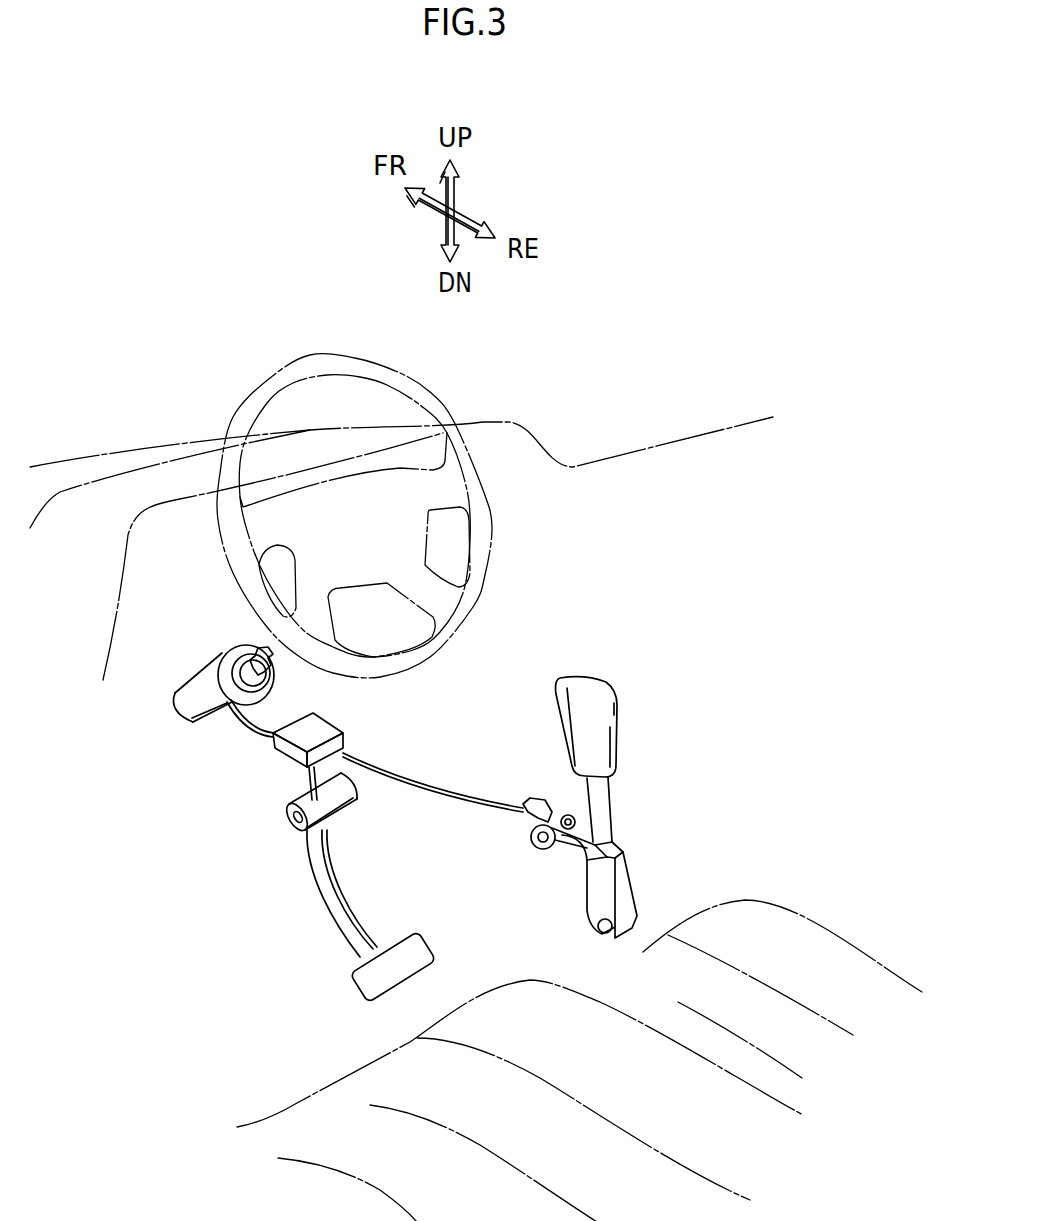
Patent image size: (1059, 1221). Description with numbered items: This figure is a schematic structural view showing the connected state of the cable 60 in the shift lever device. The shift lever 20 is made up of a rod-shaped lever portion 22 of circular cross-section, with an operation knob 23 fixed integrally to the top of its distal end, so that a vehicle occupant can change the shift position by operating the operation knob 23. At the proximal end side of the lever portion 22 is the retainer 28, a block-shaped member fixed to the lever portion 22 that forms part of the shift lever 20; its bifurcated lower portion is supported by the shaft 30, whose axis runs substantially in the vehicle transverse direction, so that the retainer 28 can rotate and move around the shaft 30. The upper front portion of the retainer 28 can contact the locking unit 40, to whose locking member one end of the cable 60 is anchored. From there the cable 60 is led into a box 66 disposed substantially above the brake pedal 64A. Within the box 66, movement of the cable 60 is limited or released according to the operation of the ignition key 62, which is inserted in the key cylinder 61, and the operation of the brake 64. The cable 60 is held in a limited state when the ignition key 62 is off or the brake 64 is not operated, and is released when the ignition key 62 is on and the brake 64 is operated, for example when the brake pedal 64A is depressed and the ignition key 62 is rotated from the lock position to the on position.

The shift lever 20 is at (624, 833).
The lever portion 22 is at (610, 800).
The operation knob 23 is at (593, 688).
The retainer 28 is at (587, 919).
The shaft 30 is at (606, 932).
The locking unit 40 is at (534, 853).
The cable 60 is at (443, 790).
The key cylinder 61 is at (253, 641).
The ignition key 62 is at (274, 652).
The brake 64 is at (396, 915).
The brake pedal 64A is at (360, 983).
The box 66 is at (318, 733).